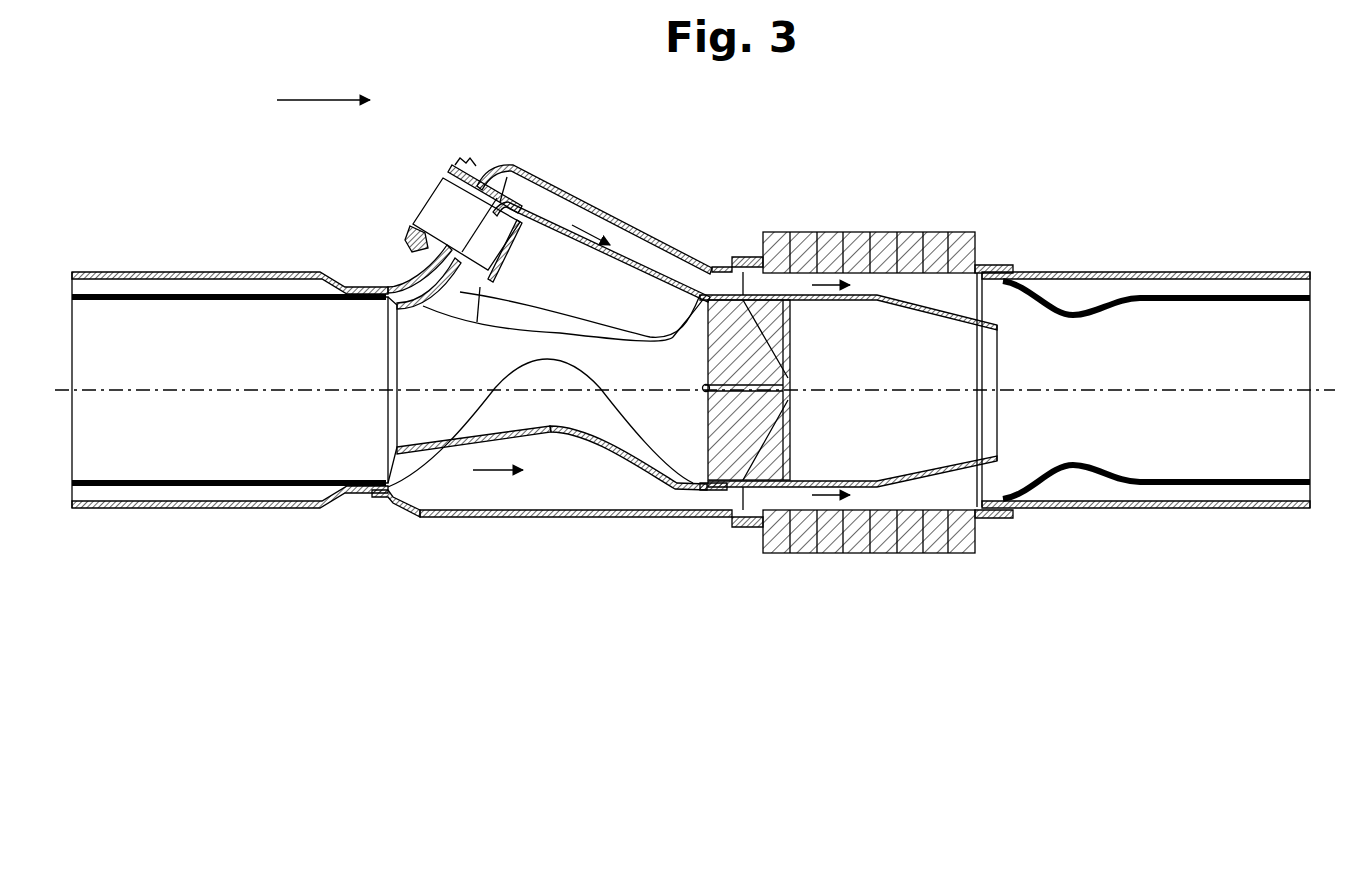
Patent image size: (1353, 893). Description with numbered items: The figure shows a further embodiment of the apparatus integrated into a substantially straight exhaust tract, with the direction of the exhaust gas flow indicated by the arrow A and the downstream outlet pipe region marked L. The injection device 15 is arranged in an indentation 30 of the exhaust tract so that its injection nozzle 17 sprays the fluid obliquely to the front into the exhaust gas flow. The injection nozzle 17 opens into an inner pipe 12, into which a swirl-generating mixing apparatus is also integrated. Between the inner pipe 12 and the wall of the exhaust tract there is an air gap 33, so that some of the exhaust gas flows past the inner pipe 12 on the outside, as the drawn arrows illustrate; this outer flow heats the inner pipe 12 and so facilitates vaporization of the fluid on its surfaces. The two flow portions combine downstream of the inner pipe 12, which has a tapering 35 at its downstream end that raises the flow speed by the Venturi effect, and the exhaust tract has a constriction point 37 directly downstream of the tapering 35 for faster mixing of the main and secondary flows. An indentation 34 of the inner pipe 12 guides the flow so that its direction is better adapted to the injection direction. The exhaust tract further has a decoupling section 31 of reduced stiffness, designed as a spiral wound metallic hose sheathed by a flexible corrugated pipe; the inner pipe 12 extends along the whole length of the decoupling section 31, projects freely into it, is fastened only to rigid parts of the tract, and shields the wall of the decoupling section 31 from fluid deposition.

The flow direction arrow A is at (300, 100).
The inner pipe 12 is at (625, 460).
The injection device 15 is at (437, 210).
The injection nozzle 17 is at (513, 254).
The indentation 30 is at (481, 151).
The decoupling section 31 is at (862, 236).
The air gap 33 is at (632, 240).
The indentation 34 is at (553, 434).
The tapering 35 is at (951, 302).
The constriction point 37 is at (1082, 324).
The outlet pipe L is at (1146, 390).